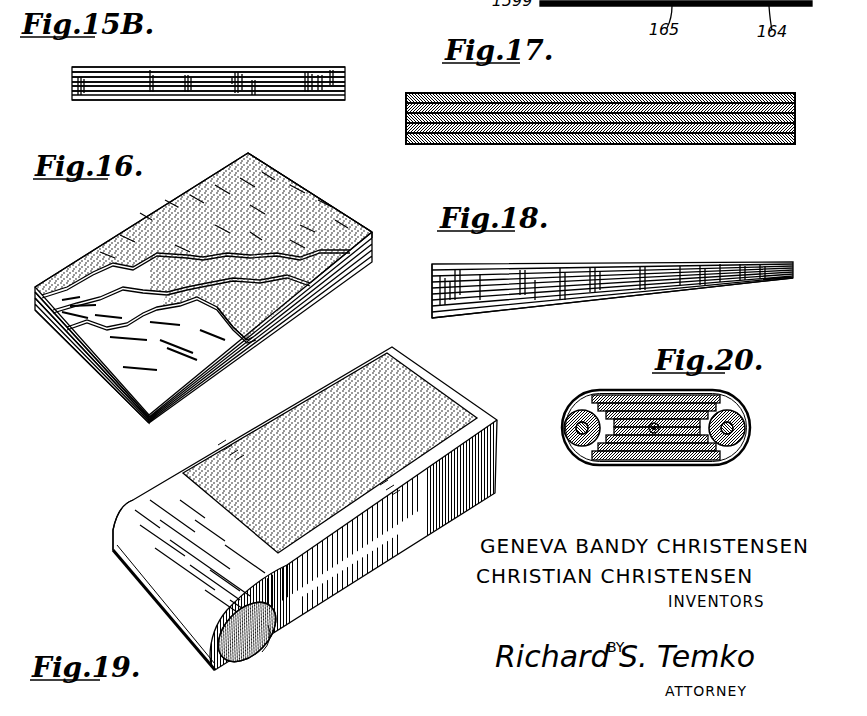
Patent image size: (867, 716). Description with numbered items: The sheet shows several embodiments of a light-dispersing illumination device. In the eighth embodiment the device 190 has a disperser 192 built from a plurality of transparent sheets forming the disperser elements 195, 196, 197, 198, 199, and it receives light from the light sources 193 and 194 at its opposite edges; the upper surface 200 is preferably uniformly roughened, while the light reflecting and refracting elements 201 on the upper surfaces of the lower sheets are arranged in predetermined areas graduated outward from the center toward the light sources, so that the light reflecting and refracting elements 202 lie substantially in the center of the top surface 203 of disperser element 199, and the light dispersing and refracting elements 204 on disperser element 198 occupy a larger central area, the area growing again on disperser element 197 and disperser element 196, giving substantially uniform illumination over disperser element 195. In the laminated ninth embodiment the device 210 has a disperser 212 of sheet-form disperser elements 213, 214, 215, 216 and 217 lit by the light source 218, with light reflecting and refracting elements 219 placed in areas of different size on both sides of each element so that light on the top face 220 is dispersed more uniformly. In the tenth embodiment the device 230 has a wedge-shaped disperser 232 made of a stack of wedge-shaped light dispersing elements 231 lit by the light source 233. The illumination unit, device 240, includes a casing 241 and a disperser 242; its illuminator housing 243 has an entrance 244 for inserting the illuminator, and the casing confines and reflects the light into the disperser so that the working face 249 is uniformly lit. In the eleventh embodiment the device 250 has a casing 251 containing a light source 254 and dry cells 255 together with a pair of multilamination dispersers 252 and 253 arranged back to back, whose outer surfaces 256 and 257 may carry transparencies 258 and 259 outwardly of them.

In FIG. 15B, the device 190 is at (337, 65).
In FIG. 16, the device 190 is at (79, 259).
In FIG. 15B, the disperser 192 is at (246, 65).
In FIG. 16, the disperser 192 is at (374, 222).
In FIG. 15B, the light source 193 is at (352, 82).
In FIG. 16, the light source 193 is at (324, 197).
In FIG. 15B, the light source 194 is at (68, 83).
In FIG. 16, the light source 194 is at (78, 368).
In FIG. 15B, the disperser element 195 is at (312, 70).
In FIG. 16, the disperser element 195 is at (290, 193).
In FIG. 15B, the disperser element 196 is at (301, 78).
In FIG. 16, the disperser element 196 is at (332, 279).
In FIG. 15B, the disperser element 197 is at (277, 84).
In FIG. 16, the disperser element 197 is at (80, 348).
In FIG. 15B, the disperser element 198 is at (236, 89).
In FIG. 16, the disperser element 198 is at (103, 322).
In FIG. 15B, the disperser element 199 is at (183, 100).
In FIG. 16, the disperser element 199 is at (158, 420).
In FIG. 15B, the upper surface 200 is at (200, 67).
In FIG. 16, the upper surface 200 is at (170, 222).
In FIG. 16, the light reflecting and refracting elements 201 is at (140, 240).
In FIG. 16, the light reflecting and refracting elements 202 is at (247, 338).
In FIG. 16, the top surface 203 is at (187, 367).
In FIG. 16, the light dispersing and refracting elements 204 is at (257, 303).
In FIG. 17, the device 210 is at (538, 148).
In FIG. 17, the disperser 212 is at (402, 138).
In FIG. 17, the disperser element 213 is at (562, 104).
In FIG. 17, the disperser element 214 is at (512, 110).
In FIG. 17, the disperser element 215 is at (473, 118).
In FIG. 17, the disperser element 216 is at (506, 128).
In FIG. 17, the disperser element 217 is at (447, 135).
In FIG. 17, the light source 218 is at (400, 117).
In FIG. 17, the light reflecting and refracting elements 219 is at (804, 138).
In FIG. 17, the top face 220 is at (636, 96).
In FIG. 18, the device 230 is at (514, 313).
In FIG. 18, the light dispersing elements 231 is at (452, 300).
In FIG. 18, the disperser 232 is at (692, 287).
In FIG. 18, the light source 233 is at (428, 292).
In FIG. 19, the device 240 is at (360, 584).
In FIG. 19, the casing 241 is at (422, 534).
In FIG. 19, the disperser 242 is at (424, 410).
In FIG. 19, the illuminator housing 243 is at (147, 570).
In FIG. 19, the entrance 244 is at (262, 647).
In FIG. 19, the working face 249 is at (306, 437).
In FIG. 20, the device 250 is at (746, 402).
In FIG. 20, the casing 251 is at (748, 419).
In FIG. 20, the disperser 252 is at (660, 415).
In FIG. 20, the disperser 253 is at (620, 451).
In FIG. 20, the light source 254 is at (655, 434).
In FIG. 20, the dry cells 255 is at (564, 438).
In FIG. 20, the outer surface 256 is at (622, 403).
In FIG. 20, the outer surface 257 is at (672, 453).
In FIG. 20, the transparency 258 is at (651, 395).
In FIG. 20, the transparency 259 is at (600, 466).